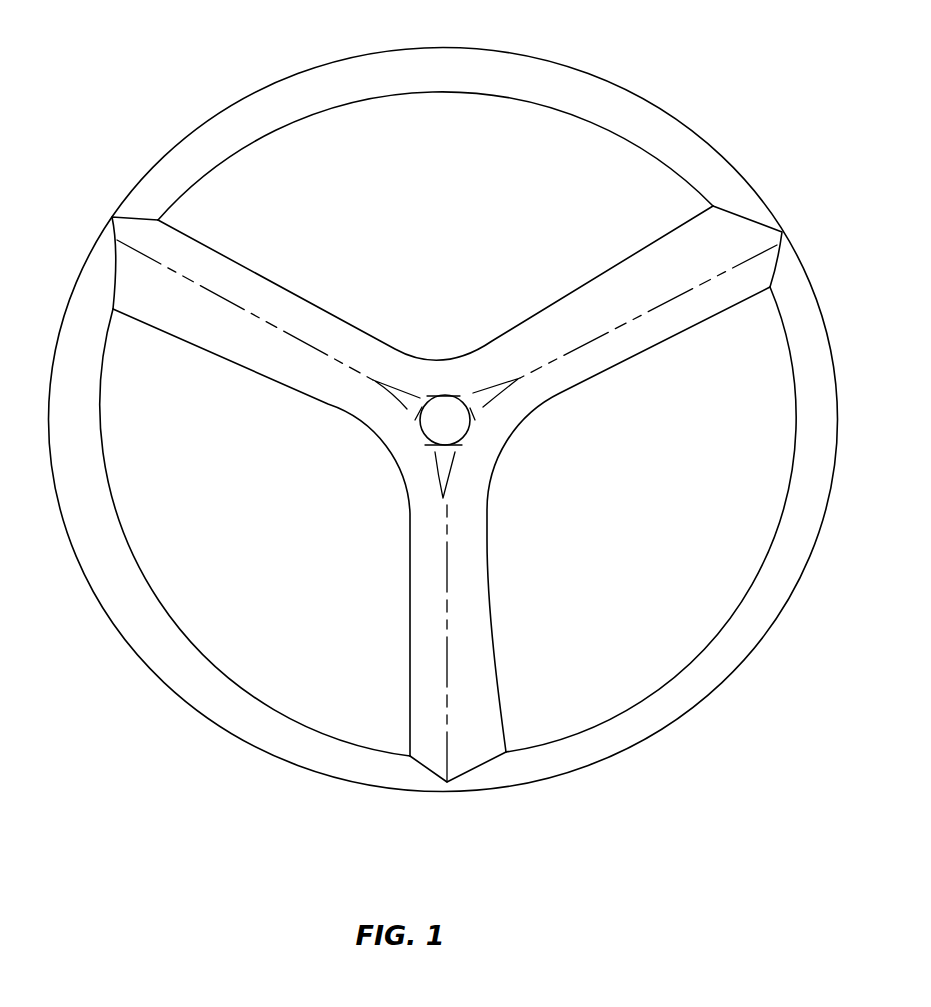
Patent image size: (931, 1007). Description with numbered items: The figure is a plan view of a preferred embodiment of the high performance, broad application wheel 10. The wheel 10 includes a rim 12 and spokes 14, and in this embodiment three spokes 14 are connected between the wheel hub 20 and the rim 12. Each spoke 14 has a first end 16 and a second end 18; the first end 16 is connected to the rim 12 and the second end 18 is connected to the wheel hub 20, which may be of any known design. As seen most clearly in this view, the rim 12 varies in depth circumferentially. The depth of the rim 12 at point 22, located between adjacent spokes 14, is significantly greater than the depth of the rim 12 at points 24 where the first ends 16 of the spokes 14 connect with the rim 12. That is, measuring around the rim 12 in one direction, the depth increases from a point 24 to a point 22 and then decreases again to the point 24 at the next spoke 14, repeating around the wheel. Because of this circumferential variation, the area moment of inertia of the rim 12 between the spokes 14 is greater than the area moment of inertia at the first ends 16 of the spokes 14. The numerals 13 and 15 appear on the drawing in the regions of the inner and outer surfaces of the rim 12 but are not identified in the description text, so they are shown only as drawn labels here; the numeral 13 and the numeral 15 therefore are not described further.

The high performance, broad application wheel 10 is at (448, 424).
The rim 12 is at (443, 401).
The inner surface of rim 13 is at (235, 683).
The spokes 14 is at (445, 494).
The outer surface of rim 15 is at (207, 718).
The first end 16 is at (185, 253).
The second end 18 is at (343, 340).
The wheel hub 20 is at (445, 420).
The point 22 is at (443, 401).
The points 24 is at (112, 217).